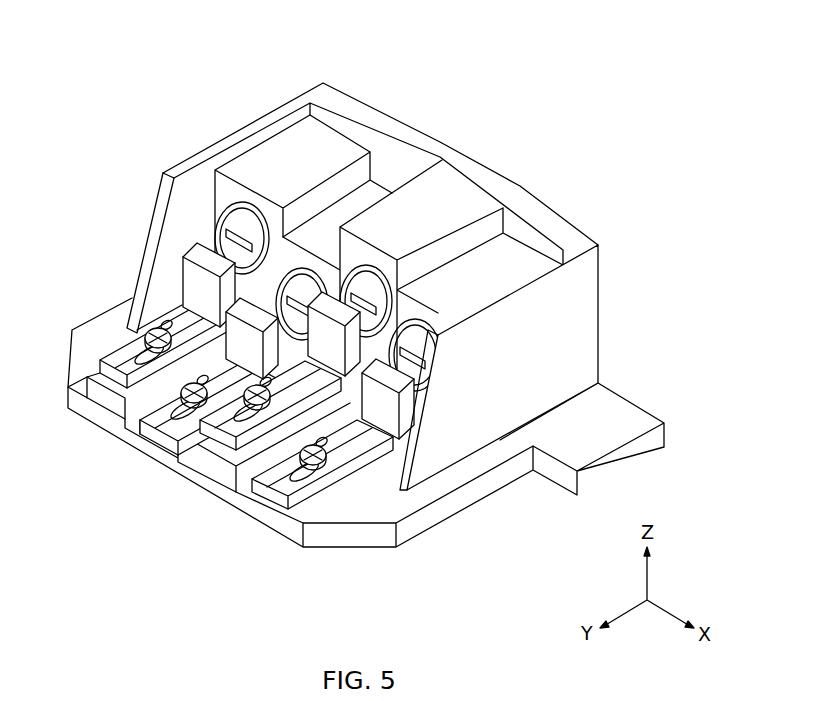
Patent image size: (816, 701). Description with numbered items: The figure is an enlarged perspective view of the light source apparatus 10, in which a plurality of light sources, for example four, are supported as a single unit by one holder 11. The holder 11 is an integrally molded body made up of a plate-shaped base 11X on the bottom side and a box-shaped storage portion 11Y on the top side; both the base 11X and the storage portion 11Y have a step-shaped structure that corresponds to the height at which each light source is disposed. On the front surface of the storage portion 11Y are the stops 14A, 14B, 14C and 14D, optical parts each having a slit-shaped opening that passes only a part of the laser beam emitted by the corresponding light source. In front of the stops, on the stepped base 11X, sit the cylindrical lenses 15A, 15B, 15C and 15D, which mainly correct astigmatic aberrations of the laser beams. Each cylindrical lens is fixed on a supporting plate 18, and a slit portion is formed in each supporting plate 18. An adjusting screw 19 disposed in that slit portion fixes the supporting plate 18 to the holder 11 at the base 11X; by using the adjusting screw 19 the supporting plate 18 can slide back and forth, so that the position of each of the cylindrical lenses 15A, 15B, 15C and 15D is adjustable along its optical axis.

The light source apparatus 10 is at (370, 331).
The holder 11 is at (370, 337).
The base 11X is at (454, 507).
The storage portion 11Y is at (588, 298).
The stop 14A is at (237, 218).
The stop 14B is at (302, 293).
The stop 14C is at (362, 290).
The stop 14D is at (420, 328).
The cylindrical lens 15A is at (192, 278).
The cylindrical lens 15B is at (237, 347).
The cylindrical lens 15C is at (323, 353).
The cylindrical lens 15D is at (383, 420).
The supporting plate 18 is at (120, 377).
The adjusting screw 19 is at (157, 318).